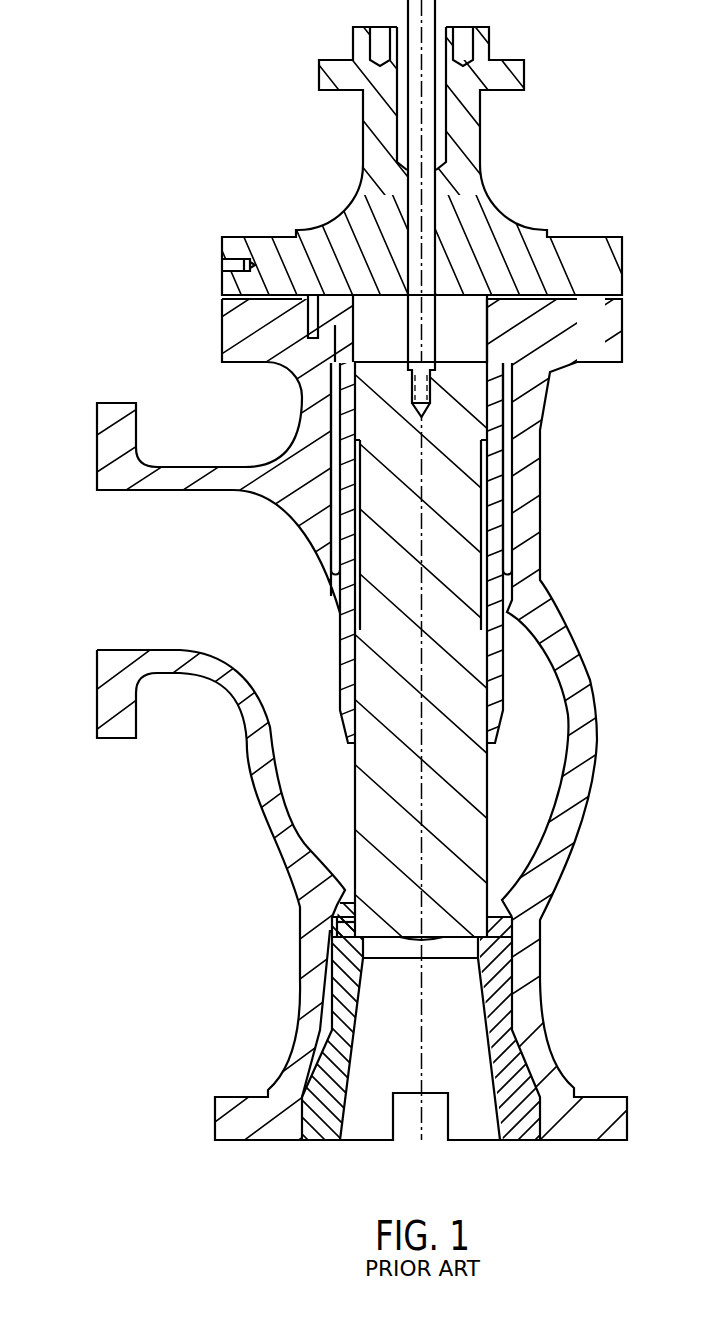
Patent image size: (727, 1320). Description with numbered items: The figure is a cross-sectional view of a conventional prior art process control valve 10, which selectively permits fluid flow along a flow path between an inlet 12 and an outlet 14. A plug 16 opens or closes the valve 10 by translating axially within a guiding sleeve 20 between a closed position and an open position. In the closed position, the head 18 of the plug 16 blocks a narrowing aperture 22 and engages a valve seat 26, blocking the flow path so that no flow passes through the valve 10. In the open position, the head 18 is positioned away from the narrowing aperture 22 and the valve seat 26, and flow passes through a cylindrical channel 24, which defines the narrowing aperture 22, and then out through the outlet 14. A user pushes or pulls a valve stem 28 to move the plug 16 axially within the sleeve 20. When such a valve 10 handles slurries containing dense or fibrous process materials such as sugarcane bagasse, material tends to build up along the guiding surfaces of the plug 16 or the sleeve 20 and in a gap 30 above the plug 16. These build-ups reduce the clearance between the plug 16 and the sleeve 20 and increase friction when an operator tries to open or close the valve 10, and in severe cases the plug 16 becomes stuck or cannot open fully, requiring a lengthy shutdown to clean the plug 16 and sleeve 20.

The process control valve 10 is at (189, 82).
The inlet 12 is at (153, 598).
The outlet 14 is at (378, 1058).
The plug 16 is at (465, 787).
The head 18 is at (437, 941).
The guiding sleeve 20 is at (474, 693).
The narrowing aperture 22 is at (356, 900).
The cylindrical channel 24 is at (467, 957).
The valve seat 26 is at (378, 921).
The valve stem 28 is at (437, 82).
The gap 30 is at (452, 315).